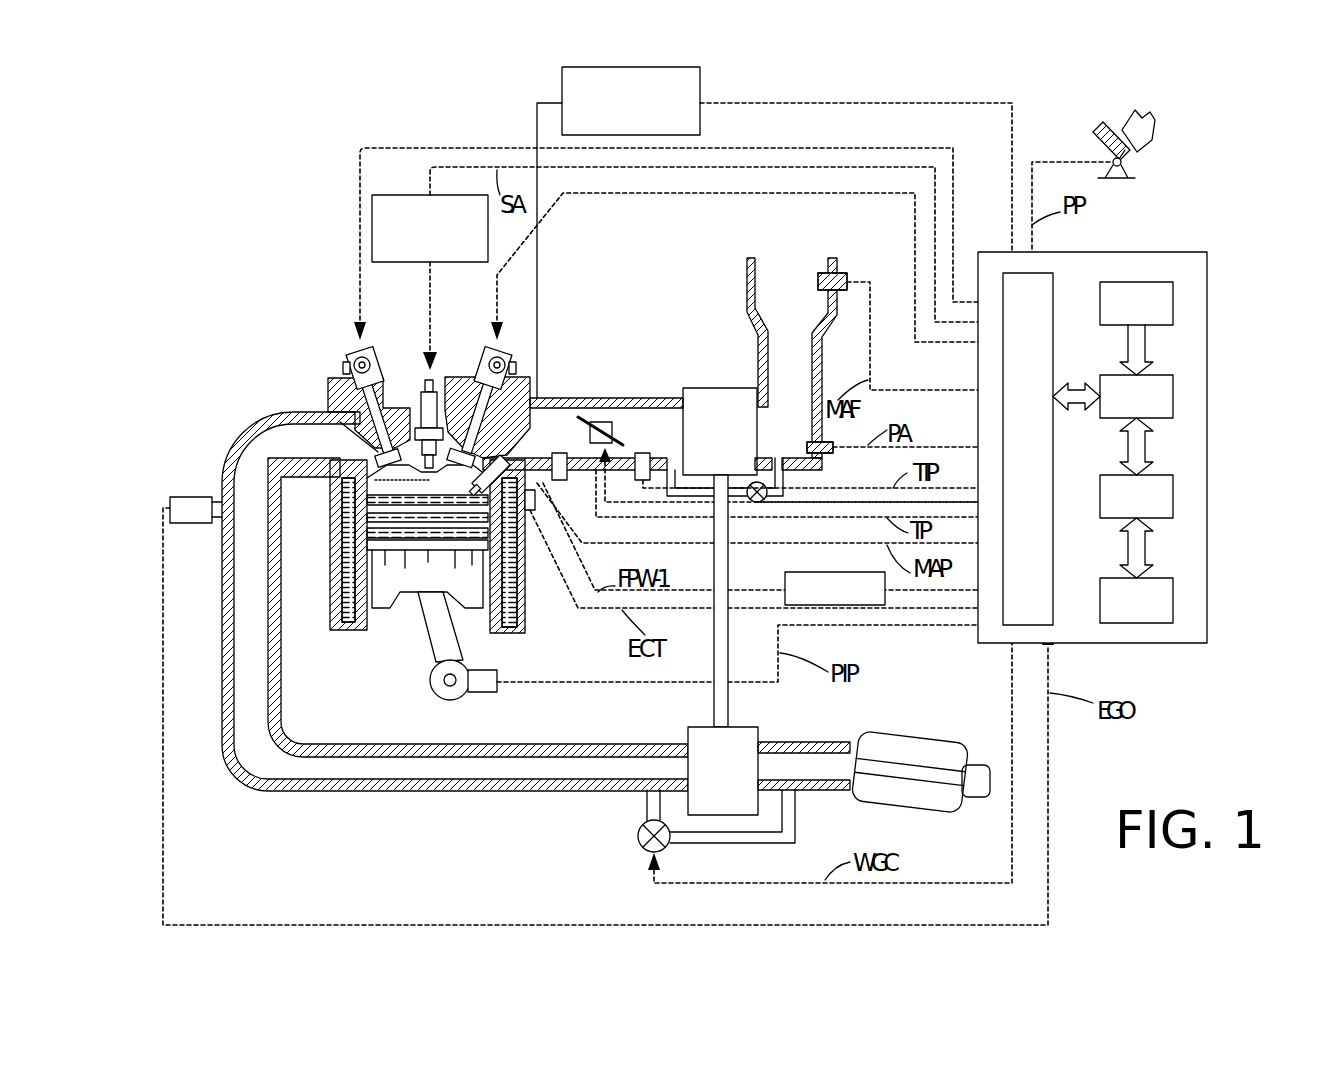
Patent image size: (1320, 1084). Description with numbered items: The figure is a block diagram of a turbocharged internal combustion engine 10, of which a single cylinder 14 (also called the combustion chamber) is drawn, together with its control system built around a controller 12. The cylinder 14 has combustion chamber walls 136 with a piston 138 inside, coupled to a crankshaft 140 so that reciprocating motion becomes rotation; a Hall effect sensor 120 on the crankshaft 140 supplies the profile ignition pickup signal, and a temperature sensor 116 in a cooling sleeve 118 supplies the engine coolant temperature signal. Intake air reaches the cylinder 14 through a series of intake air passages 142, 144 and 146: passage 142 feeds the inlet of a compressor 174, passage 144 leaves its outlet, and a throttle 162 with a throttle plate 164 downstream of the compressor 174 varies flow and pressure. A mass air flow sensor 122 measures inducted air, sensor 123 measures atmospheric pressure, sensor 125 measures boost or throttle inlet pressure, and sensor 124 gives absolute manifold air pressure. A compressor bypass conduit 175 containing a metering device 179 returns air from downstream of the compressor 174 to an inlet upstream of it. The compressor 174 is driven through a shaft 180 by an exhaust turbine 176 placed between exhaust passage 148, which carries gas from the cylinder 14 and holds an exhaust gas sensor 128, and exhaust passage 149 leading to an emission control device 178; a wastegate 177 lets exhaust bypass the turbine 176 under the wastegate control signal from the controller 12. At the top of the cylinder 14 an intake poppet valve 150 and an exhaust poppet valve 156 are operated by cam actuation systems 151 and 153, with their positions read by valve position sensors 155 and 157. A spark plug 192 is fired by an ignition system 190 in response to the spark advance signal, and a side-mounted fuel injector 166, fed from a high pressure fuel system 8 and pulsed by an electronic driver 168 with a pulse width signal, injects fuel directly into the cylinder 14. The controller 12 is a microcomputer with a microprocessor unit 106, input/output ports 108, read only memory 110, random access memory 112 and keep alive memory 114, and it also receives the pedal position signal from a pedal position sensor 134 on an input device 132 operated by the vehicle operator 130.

The fuel system 8 is at (700, 80).
The internal combustion engine 10 is at (215, 275).
The controller 12 is at (1131, 434).
The cylinder 14 is at (355, 478).
The microprocessor unit 106 is at (1175, 392).
The input/output ports 108 is at (1057, 280).
The read only memory chip 110 is at (1175, 300).
The random access memory 112 is at (1175, 495).
The keep alive memory 114 is at (1175, 600).
The temperature sensor 116 is at (535, 513).
The cooling sleeve 118 is at (523, 608).
The Hall effect sensor 120 is at (490, 693).
The mass air flow sensor 122 is at (840, 274).
The sensor 123 is at (826, 453).
The sensor 124 is at (562, 480).
The sensor 125 is at (645, 480).
The exhaust gas sensor 128 is at (170, 497).
The vehicle operator 130 is at (1147, 122).
The input device 132 is at (1100, 138).
The pedal position sensor 134 is at (1127, 163).
The combustion chamber walls 136 is at (368, 620).
The piston 138 is at (412, 580).
The crankshaft 140 is at (440, 702).
The intake air passage 142 is at (807, 308).
The intake air passage 144 is at (668, 443).
The intake air passage 146 is at (568, 443).
The exhaust passage 148 is at (315, 455).
The exhaust passage 149 is at (825, 778).
The intake poppet valve 150 is at (440, 440).
The cam actuation system 151 is at (485, 352).
The cam actuation system 153 is at (375, 352).
The valve position sensor 155 is at (514, 372).
The exhaust poppet valve 156 is at (332, 415).
The valve position sensor 157 is at (345, 368).
The throttle 162 is at (609, 422).
The throttle plate 164 is at (584, 420).
The fuel injector 166 is at (500, 460).
The electronic driver 168 is at (787, 574).
The compressor 174 is at (703, 388).
The compressor bypass conduit 175 is at (783, 477).
The exhaust turbine 176 is at (688, 735).
The wastegate 177 is at (638, 850).
The emission control device 178 is at (907, 737).
The metering device 179 is at (763, 503).
The shaft 180 is at (722, 690).
The ignition system 190 is at (387, 195).
The spark plug 192 is at (418, 423).